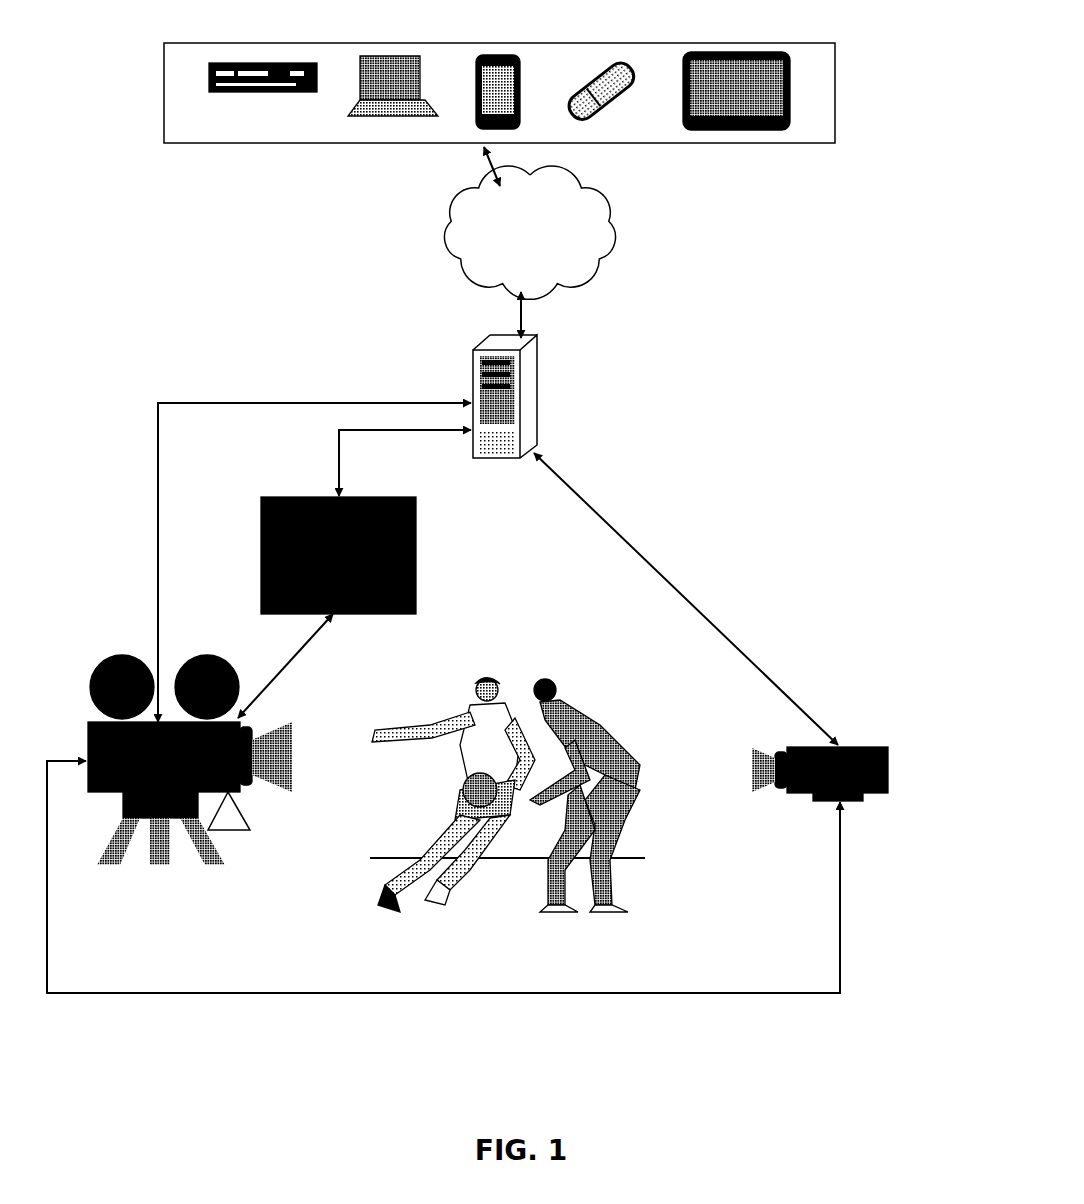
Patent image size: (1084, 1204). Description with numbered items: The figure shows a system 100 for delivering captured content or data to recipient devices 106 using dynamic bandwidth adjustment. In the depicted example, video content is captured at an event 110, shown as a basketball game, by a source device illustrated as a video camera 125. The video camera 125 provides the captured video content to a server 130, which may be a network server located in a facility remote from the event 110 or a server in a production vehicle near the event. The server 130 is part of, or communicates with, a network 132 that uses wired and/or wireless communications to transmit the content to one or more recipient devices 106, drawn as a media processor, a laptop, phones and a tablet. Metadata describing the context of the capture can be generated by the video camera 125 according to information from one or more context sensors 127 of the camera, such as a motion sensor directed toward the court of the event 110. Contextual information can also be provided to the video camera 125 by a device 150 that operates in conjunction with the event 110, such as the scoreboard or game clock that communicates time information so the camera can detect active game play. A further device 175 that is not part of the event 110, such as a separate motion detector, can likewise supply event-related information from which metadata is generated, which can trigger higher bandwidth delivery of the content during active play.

The system 100 is at (548, 1125).
The recipient devices 106 is at (835, 93).
The event 110 is at (485, 640).
The video camera 125 is at (87, 745).
The context sensor 127 is at (250, 818).
The server 130 is at (537, 363).
The network 132 is at (501, 244).
The device operating in conjunction with the event 150 is at (313, 497).
The device not part of the event 175 is at (888, 770).